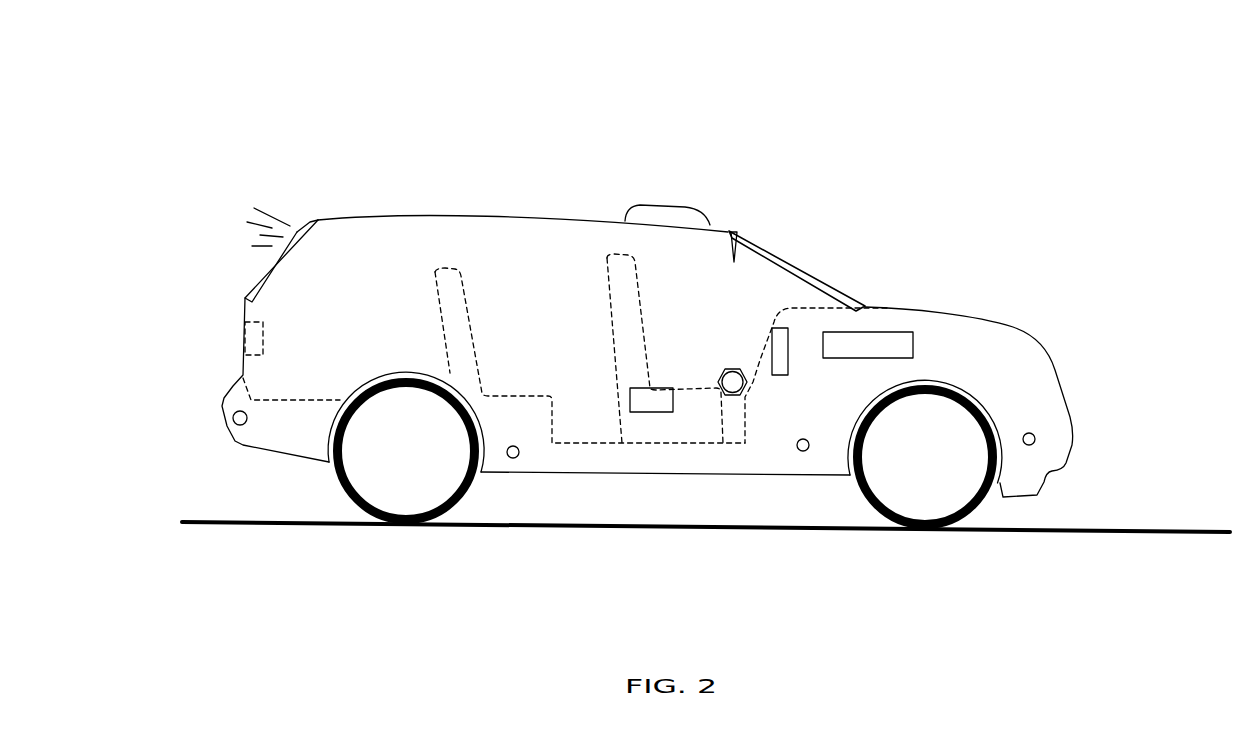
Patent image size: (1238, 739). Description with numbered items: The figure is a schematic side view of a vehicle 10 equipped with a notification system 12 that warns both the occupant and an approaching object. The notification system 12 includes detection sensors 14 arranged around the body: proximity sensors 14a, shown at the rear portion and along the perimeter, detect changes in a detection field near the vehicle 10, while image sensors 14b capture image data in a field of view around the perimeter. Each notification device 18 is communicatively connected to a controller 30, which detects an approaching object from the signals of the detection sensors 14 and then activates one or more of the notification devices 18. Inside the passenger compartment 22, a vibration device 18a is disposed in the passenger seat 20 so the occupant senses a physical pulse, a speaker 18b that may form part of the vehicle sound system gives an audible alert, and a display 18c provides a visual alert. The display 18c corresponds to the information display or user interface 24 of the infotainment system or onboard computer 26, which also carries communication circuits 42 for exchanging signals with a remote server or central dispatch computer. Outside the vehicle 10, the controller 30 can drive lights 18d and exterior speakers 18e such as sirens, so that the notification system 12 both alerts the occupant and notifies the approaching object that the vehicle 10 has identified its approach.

The vehicle 10 is at (972, 93).
The notification system 12 is at (518, 99).
The detection sensors 14 is at (616, 416).
The proximity sensors 14a is at (233, 427).
The image sensors 14b is at (288, 249).
The notification devices 18 is at (540, 273).
The vibration device 18a is at (658, 400).
The speaker 18b is at (735, 367).
The display 18c is at (737, 235).
The lights 18d is at (297, 230).
The exterior speakers 18e is at (625, 205).
The passenger seat 20 is at (618, 277).
The passenger compartment 22 is at (484, 237).
The user interface 24 is at (823, 366).
The onboard computer 26 is at (773, 365).
The controller 30 is at (968, 312).
The communication circuits 42 is at (917, 342).